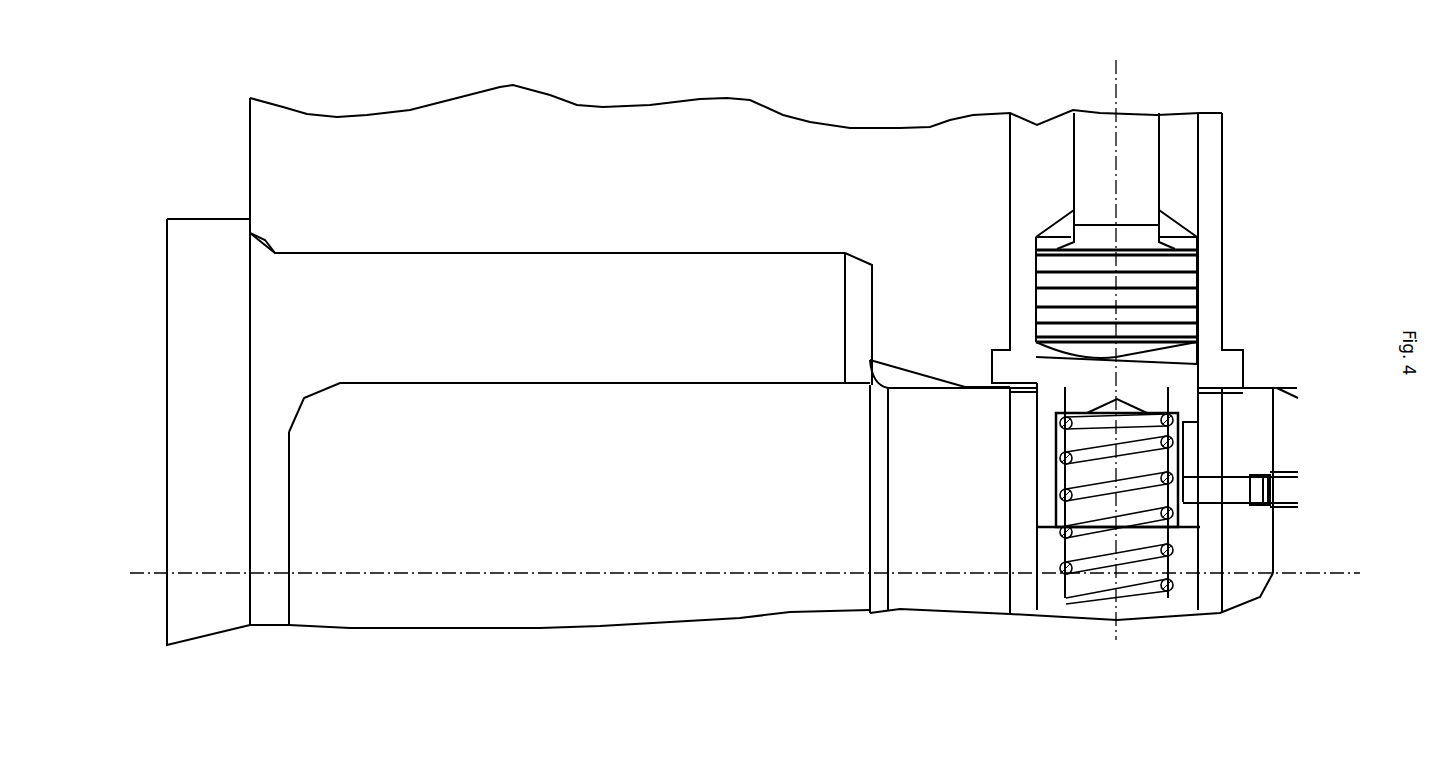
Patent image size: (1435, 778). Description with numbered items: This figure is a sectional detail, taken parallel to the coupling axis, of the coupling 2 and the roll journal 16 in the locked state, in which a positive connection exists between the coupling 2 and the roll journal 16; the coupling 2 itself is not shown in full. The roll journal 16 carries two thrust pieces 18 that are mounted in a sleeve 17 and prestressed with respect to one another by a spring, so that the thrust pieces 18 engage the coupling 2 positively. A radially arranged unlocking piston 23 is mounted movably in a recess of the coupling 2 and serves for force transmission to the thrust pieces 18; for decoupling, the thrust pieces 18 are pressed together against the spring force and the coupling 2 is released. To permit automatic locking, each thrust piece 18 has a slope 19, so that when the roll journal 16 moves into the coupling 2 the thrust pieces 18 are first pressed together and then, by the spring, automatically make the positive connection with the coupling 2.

The coupling 2 is at (480, 131).
The roll journal 16 is at (555, 303).
The unlocking piston 23 is at (1138, 167).
The slope 19 is at (1168, 360).
The thrust piece 18 is at (1180, 391).
The sleeve 17 is at (1213, 550).